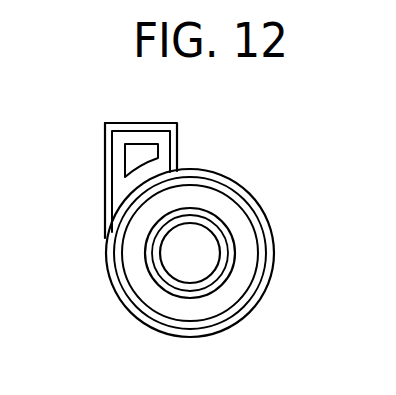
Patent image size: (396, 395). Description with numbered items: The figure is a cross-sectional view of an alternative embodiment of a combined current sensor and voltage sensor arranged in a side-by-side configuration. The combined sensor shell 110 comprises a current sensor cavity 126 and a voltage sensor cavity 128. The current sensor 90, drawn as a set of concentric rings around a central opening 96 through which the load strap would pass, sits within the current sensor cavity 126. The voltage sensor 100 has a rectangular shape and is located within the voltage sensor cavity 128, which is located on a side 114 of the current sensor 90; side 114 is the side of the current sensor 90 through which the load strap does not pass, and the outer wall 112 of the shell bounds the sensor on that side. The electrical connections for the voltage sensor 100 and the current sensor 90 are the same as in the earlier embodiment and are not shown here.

The current sensor 90 is at (282, 249).
The inner bearing race / hub 96 is at (248, 268).
The voltage sensor 100 is at (168, 118).
The combined sensor shell 110 is at (306, 181).
The bracket side wall 112 is at (105, 240).
The side 114 is at (121, 204).
The current sensor cavity 126 is at (266, 223).
The voltage sensor cavity 128 is at (166, 151).